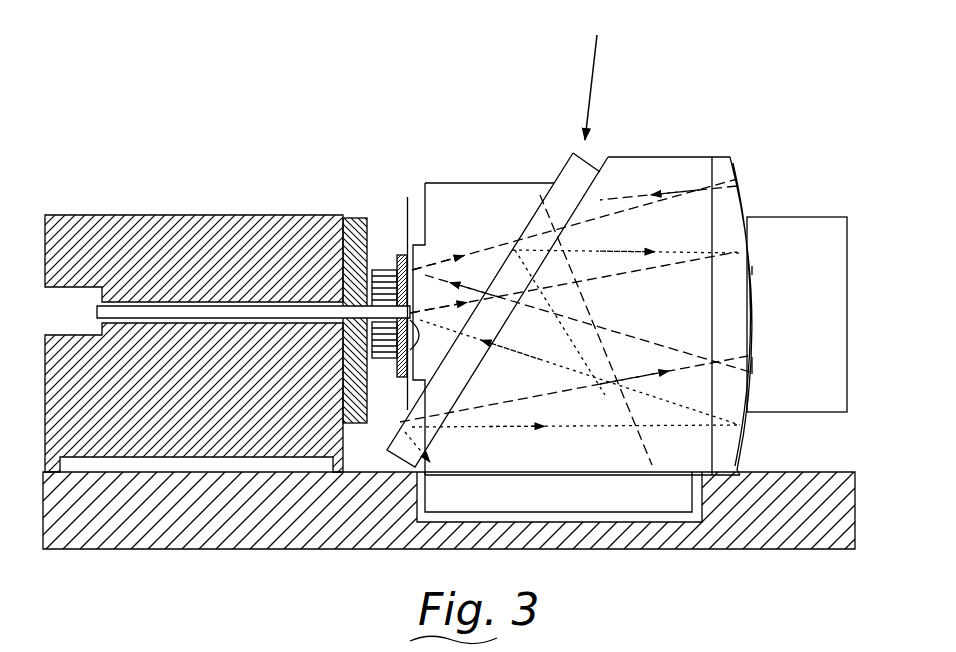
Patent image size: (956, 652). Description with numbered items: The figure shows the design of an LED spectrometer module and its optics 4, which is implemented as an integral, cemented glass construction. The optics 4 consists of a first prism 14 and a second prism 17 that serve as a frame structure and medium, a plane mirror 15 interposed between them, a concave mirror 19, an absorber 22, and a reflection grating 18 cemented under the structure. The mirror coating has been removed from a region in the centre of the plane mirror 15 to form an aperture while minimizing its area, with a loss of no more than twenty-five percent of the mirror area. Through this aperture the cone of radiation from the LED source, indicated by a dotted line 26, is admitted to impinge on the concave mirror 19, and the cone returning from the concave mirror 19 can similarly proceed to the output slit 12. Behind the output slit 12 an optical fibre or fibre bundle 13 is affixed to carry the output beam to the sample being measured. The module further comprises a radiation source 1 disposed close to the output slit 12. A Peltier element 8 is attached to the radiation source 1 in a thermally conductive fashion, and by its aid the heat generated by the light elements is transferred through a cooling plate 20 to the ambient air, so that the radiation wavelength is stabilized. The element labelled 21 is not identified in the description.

The radiation source 1 is at (404, 200).
The optics 4 is at (592, 95).
The Peltier element 8 is at (383, 265).
The output slit 12 is at (408, 362).
The optical fibre 13 is at (233, 313).
The first prism 14 is at (458, 203).
The plane mirror 15 is at (590, 177).
The second prism 17 is at (663, 178).
The reflection grating 18 is at (600, 497).
The concave mirror 19 is at (745, 187).
The cooling plate 20 is at (303, 460).
The base plate 21 is at (747, 548).
The absorber 22 is at (828, 348).
The cone of radiation 26 is at (677, 197).